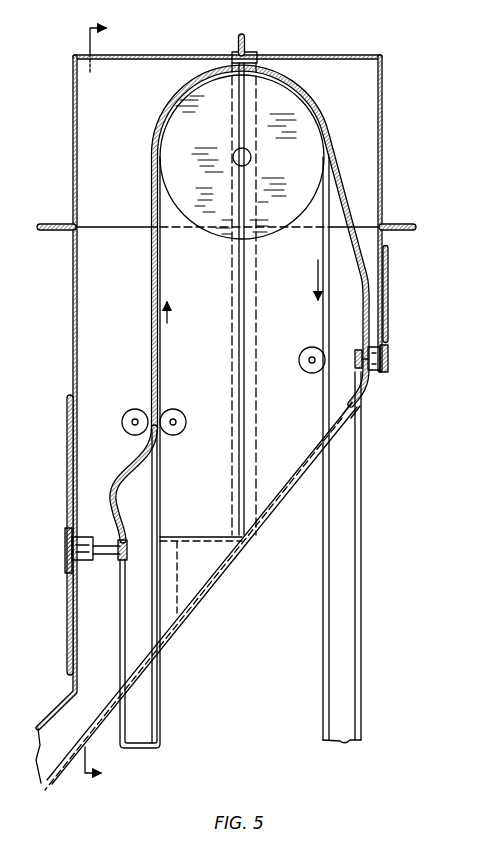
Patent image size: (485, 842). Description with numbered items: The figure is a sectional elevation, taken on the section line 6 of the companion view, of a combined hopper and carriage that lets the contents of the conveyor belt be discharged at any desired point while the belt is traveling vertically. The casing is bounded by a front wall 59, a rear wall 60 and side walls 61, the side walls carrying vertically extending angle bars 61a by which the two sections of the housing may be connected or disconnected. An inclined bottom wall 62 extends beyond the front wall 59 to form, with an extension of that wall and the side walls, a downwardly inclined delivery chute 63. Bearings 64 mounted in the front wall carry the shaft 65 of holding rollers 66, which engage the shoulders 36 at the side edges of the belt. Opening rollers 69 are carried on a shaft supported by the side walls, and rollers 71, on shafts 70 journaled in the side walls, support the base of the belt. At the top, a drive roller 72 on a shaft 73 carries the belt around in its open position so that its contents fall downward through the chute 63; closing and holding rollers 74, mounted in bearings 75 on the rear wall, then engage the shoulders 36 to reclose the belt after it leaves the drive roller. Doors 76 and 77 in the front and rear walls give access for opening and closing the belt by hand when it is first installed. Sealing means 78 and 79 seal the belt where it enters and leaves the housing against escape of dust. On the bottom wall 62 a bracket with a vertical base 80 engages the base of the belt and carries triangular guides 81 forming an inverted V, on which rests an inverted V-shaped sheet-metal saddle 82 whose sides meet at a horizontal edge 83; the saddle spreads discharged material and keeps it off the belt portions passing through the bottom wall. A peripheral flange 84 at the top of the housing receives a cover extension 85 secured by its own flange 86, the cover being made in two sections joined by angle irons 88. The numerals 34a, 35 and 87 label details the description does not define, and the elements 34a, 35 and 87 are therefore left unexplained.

The section line 6— 6 is at (108, 400).
The left tube 34a is at (158, 672).
The tube bottom 35 is at (140, 710).
The shoulders 36 is at (120, 597).
The front wall 59 is at (72, 284).
The rear wall 60 is at (383, 158).
The side walls 61 is at (92, 346).
The angle bars 61a is at (228, 362).
The inclined bottom wall 62 is at (264, 520).
The delivery chute 63 is at (54, 738).
The bearings 64 is at (86, 537).
The shaft 65 is at (103, 545).
The holding rollers 66 is at (126, 540).
The opening rollers 69 is at (133, 410).
The shafts 70 is at (176, 428).
The rollers 71 is at (173, 410).
The drive roller 72 is at (298, 110).
The shaft 73 is at (251, 156).
The closing and holding rollers 74 is at (354, 352).
The bearings 75 is at (389, 366).
The door 76 is at (67, 478).
The door 77 is at (388, 304).
The sealing means 78 is at (372, 384).
The sealing means 79 is at (162, 634).
The vertical base 80 is at (160, 568).
The triangular guides 81 is at (182, 593).
The inverted V-shaped saddle 82 is at (205, 555).
The edge 83 is at (198, 537).
The peripheral flange 84 is at (56, 231).
The cover extension 85 is at (292, 57).
The peripheral flange 86 is at (58, 223).
The right shaft end 87 is at (403, 228).
The angle irons 88 is at (243, 48).